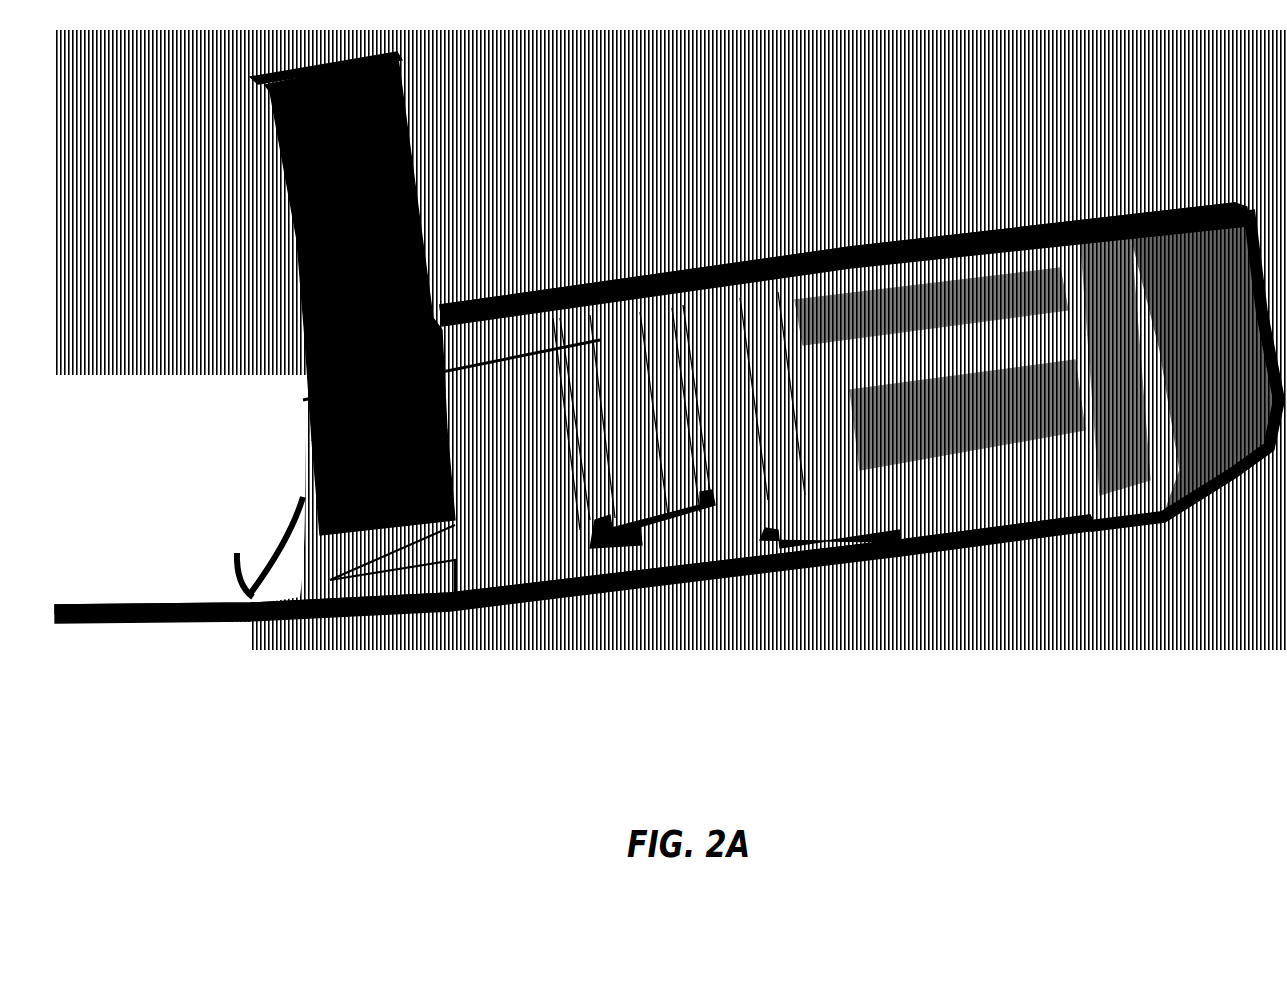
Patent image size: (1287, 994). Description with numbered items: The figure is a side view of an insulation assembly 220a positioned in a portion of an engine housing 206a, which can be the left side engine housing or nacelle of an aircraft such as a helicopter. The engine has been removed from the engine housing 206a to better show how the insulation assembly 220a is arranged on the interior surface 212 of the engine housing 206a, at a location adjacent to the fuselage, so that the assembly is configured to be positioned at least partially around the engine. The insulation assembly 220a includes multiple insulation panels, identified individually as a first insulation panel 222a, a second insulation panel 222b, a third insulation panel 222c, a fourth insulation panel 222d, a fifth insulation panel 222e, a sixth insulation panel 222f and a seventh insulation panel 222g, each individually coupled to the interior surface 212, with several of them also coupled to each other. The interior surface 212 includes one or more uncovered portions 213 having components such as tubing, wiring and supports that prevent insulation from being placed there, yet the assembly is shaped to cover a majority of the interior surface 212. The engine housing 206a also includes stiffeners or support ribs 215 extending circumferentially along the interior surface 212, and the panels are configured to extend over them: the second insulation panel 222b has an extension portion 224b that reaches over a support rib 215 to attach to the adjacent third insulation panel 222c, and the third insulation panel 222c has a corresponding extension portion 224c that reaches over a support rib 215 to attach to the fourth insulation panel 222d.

The insulation assembly 220a is at (667, 413).
The seventh insulation panel 222g is at (383, 167).
The sixth insulation panel 222f is at (403, 273).
The fifth insulation panel 222e is at (352, 396).
The fourth insulation panel 222d is at (500, 547).
The third insulation panel 222c is at (617, 338).
The second insulation panel 222b is at (748, 325).
The first insulation panel 222a is at (1192, 452).
The extension portion 224c is at (560, 343).
The extension portion 224b is at (683, 340).
The engine housing 206a is at (1062, 232).
The uncovered portions 213 is at (275, 525).
The support ribs 215 is at (707, 493).
The interior surface 212 is at (785, 535).